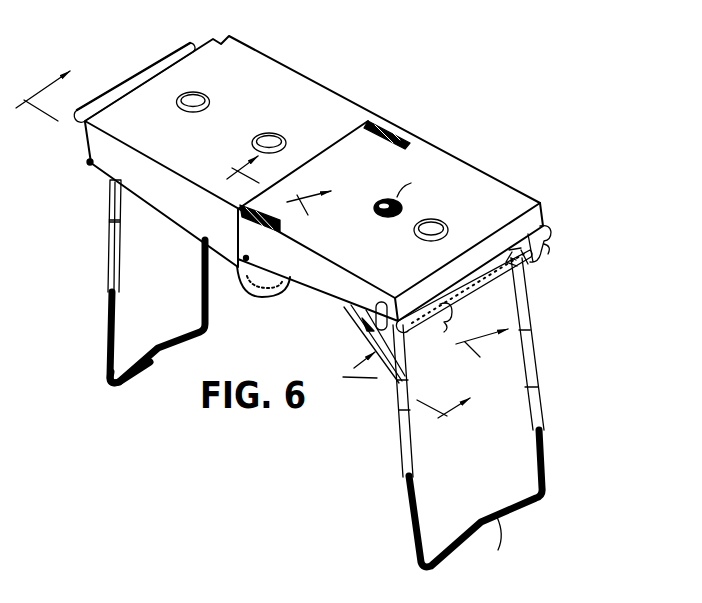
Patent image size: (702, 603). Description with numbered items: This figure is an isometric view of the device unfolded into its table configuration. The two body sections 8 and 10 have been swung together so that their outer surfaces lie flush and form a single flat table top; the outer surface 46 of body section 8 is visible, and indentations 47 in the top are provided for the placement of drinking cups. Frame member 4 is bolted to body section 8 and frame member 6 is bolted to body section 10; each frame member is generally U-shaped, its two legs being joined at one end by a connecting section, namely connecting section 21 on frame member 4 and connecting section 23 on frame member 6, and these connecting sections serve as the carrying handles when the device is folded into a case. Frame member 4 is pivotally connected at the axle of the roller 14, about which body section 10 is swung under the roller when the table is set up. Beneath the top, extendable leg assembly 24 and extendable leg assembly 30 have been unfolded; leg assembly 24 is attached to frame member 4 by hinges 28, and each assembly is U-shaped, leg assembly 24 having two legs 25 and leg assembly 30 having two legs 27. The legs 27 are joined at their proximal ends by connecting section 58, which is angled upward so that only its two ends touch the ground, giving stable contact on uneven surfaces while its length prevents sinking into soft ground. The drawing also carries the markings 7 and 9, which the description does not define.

The frame member 4 is at (553, 237).
The frame member 6 is at (163, 50).
The folding direction arrow 7 is at (255, 224).
The body section 8 is at (476, 166).
The pivot direction arrow 9 is at (273, 197).
The body section 10 is at (340, 92).
The roller 14 is at (260, 292).
The connecting section 21 is at (526, 266).
The connecting section 23 is at (118, 88).
The extendable leg assembly 24 is at (533, 384).
The legs 25 is at (402, 450).
The legs 27 is at (203, 297).
The hinge 28 is at (367, 339).
The extendable leg assembly 30 is at (106, 256).
The outer surface 46 is at (384, 271).
The indentations 47 is at (207, 108).
The connecting section 58 is at (134, 373).